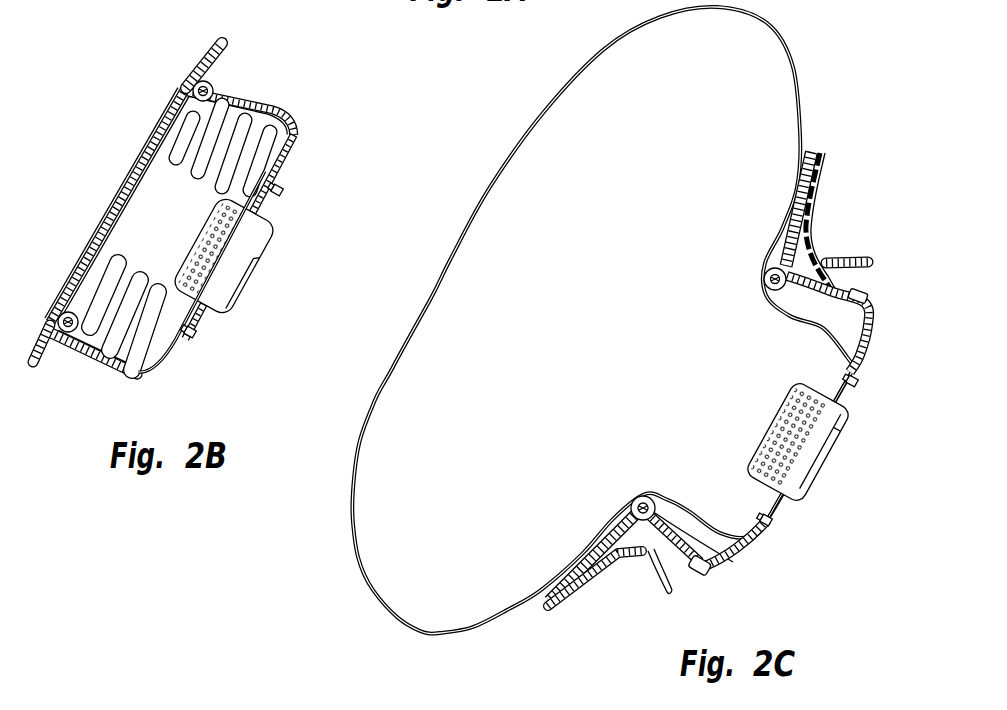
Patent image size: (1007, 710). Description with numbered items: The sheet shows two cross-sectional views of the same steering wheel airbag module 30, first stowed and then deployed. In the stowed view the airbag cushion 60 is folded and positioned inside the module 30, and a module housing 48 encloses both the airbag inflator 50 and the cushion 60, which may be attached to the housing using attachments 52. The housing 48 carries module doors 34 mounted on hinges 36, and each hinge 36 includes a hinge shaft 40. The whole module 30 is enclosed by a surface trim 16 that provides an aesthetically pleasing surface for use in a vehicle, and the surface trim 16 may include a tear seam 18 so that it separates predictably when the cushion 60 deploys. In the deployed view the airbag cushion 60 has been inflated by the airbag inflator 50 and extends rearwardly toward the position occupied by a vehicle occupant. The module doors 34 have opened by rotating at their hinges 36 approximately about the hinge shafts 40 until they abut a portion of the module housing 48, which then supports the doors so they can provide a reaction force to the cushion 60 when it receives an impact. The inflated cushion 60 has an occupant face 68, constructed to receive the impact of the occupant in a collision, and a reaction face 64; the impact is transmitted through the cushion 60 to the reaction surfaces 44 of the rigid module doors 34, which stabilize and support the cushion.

In FIG. 2B, the surface trim 16 is at (218, 40).
In FIG. 2C, the surface trim 16 is at (815, 152).
In FIG. 2B, the tear seam 18 is at (118, 192).
In FIG. 2B, the airbag module 30 is at (320, 95).
In FIG. 2C, the airbag module 30 is at (834, 194).
In FIG. 2B, the module doors 34 is at (128, 172).
In FIG. 2C, the module doors 34 is at (823, 257).
In FIG. 2B, the hinges 36 is at (197, 83).
In FIG. 2C, the hinges 36 is at (634, 530).
In FIG. 2B, the hinge shaft 40 is at (232, 73).
In FIG. 2C, the hinge shaft 40 is at (733, 567).
In FIG. 2C, the reaction surfaces 44 is at (786, 240).
In FIG. 2B, the module housing 48 is at (172, 374).
In FIG. 2C, the module housing 48 is at (870, 328).
In FIG. 2B, the airbag inflator 50 is at (258, 252).
In FIG. 2C, the airbag inflator 50 is at (805, 480).
In FIG. 2B, the attachments 52 is at (285, 191).
In FIG. 2C, the attachments 52 is at (853, 387).
In FIG. 2B, the airbag cushion 60 is at (295, 137).
In FIG. 2C, the airbag cushion 60 is at (602, 320).
In FIG. 2C, the reaction face 64 is at (803, 233).
In FIG. 2C, the occupant face 68 is at (450, 263).